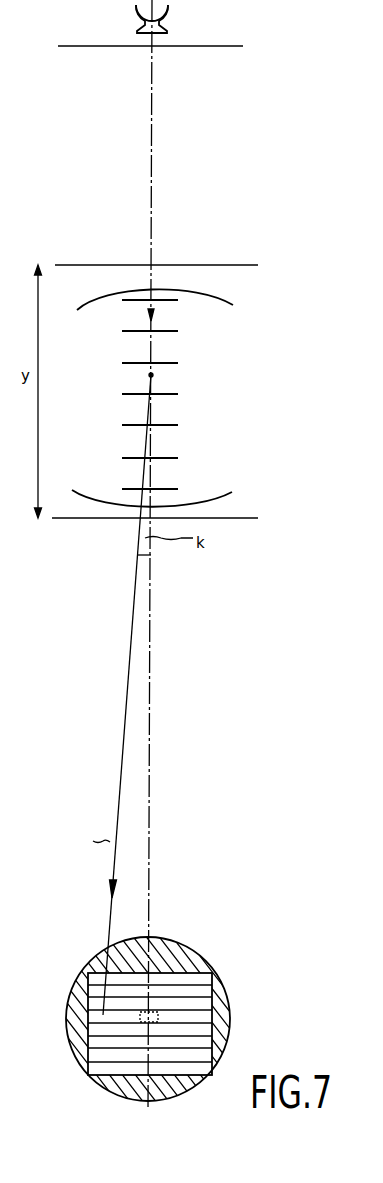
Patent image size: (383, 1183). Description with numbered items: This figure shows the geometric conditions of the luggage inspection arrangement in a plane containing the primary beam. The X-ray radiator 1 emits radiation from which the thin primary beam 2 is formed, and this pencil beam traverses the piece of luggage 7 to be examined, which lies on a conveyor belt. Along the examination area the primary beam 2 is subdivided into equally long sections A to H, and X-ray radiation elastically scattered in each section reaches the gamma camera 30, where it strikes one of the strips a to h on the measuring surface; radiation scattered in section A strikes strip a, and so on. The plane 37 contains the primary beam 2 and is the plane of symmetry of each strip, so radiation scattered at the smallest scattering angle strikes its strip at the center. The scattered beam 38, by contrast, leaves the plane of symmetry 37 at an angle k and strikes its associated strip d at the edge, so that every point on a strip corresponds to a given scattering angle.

The X-ray radiator 1 is at (168, 12).
The primary beam 2 is at (152, 191).
The piece of luggage 7 is at (230, 307).
The gamma camera 30 is at (170, 938).
The plane of symmetry 37 is at (151, 614).
The scattered beam 38 is at (128, 666).